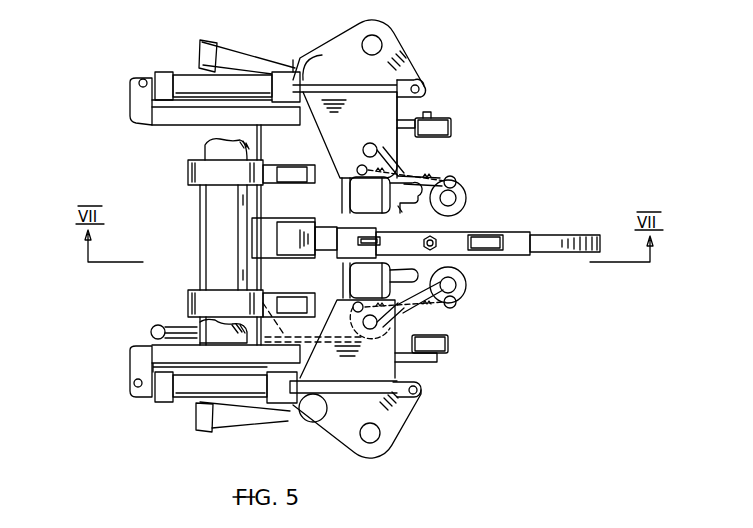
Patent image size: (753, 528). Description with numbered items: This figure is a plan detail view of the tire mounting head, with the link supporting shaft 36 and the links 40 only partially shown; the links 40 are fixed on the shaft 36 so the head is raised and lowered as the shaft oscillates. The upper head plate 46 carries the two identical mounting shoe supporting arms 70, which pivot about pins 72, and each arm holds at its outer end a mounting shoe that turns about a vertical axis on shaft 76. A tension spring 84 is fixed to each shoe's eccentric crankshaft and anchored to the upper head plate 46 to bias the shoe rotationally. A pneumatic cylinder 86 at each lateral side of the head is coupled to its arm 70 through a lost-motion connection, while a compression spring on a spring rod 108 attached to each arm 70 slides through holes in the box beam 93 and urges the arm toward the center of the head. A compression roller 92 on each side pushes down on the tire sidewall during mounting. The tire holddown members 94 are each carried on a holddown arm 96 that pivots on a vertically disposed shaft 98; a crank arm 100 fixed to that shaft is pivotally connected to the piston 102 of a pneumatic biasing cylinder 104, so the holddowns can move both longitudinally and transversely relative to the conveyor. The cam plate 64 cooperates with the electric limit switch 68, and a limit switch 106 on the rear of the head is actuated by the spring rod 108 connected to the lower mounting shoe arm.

The shaft 36 is at (212, 222).
The links 40 is at (270, 185).
The upper head plate 46 is at (362, 136).
The cam plate 64 is at (460, 250).
The electric limit switch 68 is at (288, 242).
The mounting shoe supporting arms 70 is at (408, 167).
The pins 72 is at (363, 150).
The shaft 76 is at (463, 200).
The tension spring 84 is at (456, 182).
The pneumatic cylinder 86 is at (253, 58).
The compression roller 92 is at (452, 128).
The box beam 93 is at (300, 156).
The tire holddown members 94 is at (404, 206).
The holddown arms 96 is at (373, 206).
The vertically disposed shaft 98 is at (383, 45).
The crank arm 100 is at (400, 413).
The piston 102 is at (334, 85).
The pneumatic biasing cylinder 104 is at (215, 98).
The limit switch 106 is at (180, 323).
The spring rod 108 is at (272, 326).